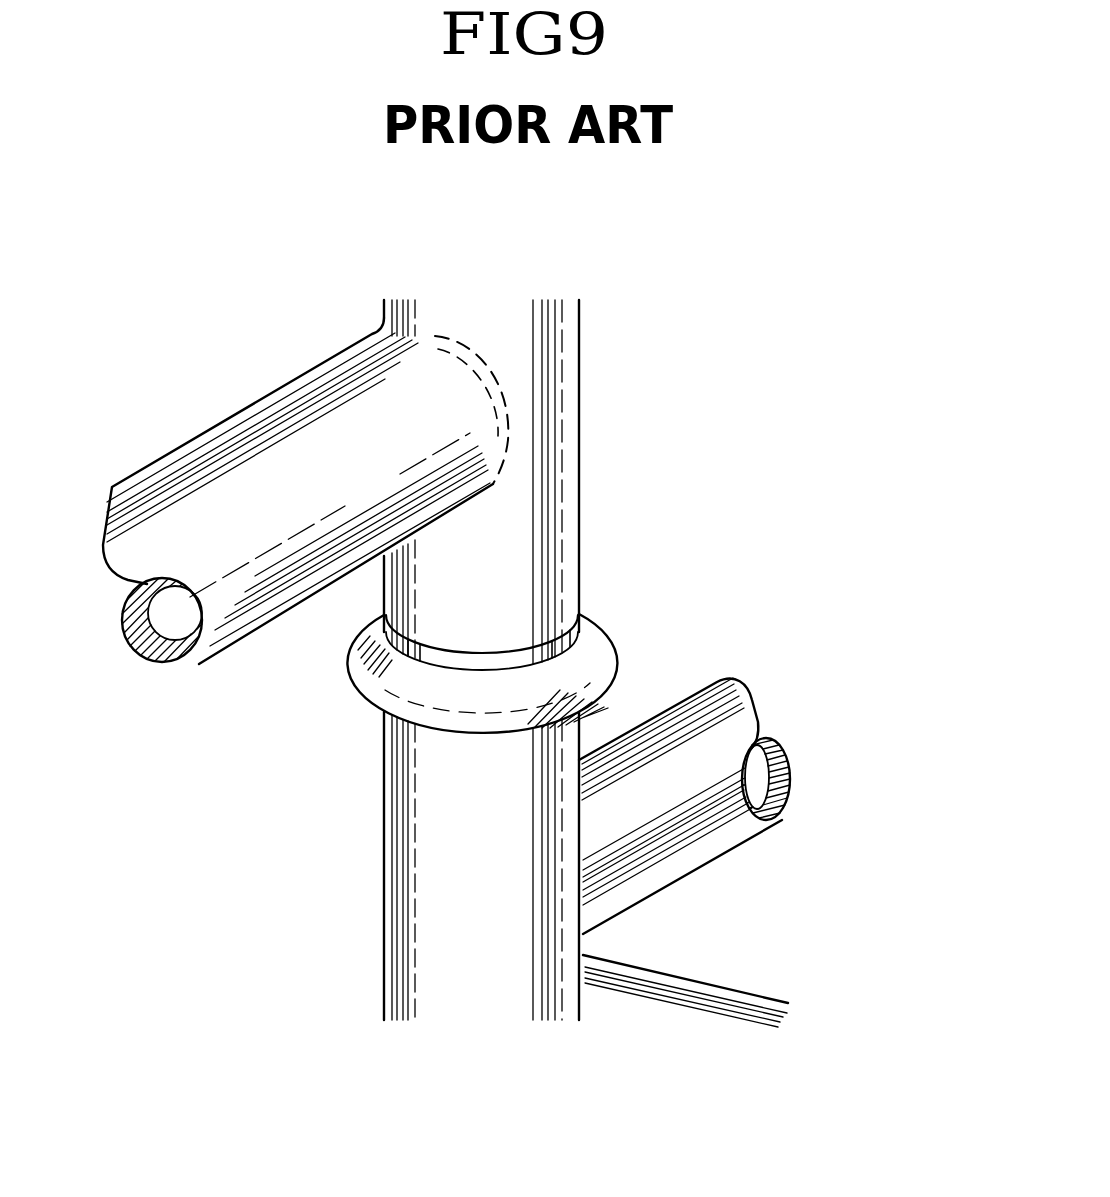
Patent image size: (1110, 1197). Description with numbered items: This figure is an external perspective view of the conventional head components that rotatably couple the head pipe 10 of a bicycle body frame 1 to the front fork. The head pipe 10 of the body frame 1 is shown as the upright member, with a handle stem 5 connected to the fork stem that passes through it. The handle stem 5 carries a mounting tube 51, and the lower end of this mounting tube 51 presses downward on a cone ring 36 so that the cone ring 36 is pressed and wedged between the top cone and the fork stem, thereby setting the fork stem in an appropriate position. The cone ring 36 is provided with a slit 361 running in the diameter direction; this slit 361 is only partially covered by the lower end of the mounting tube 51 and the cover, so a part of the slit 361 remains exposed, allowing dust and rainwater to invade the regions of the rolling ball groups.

The body frame 1 is at (710, 667).
The handle stem 5 is at (202, 415).
The head pipe 10 is at (524, 663).
The cone ring 36 is at (480, 641).
The slit 361 is at (418, 650).
The mounting tube 51 is at (543, 473).